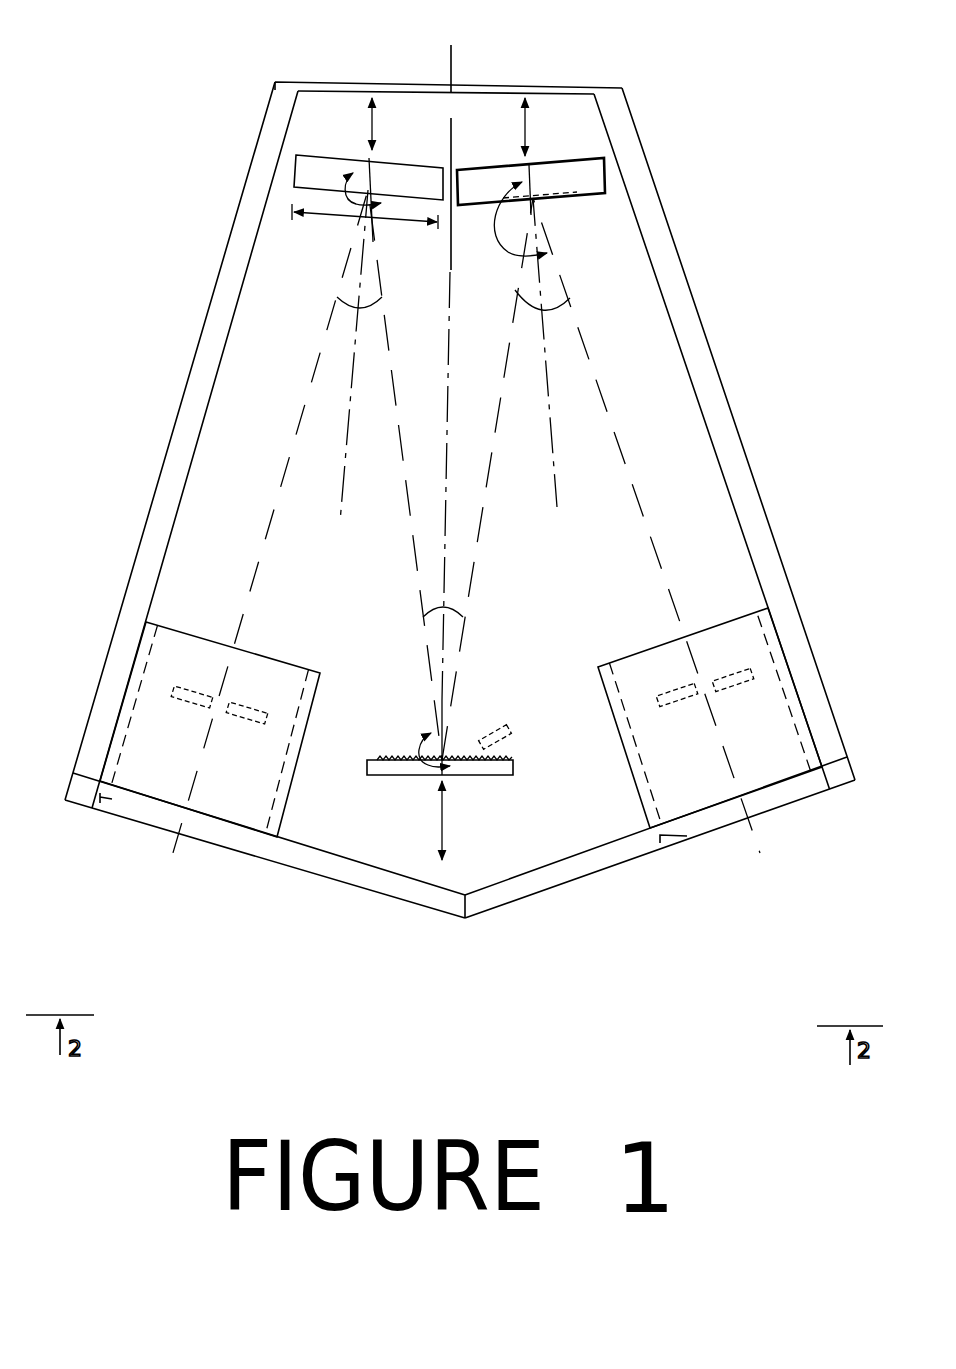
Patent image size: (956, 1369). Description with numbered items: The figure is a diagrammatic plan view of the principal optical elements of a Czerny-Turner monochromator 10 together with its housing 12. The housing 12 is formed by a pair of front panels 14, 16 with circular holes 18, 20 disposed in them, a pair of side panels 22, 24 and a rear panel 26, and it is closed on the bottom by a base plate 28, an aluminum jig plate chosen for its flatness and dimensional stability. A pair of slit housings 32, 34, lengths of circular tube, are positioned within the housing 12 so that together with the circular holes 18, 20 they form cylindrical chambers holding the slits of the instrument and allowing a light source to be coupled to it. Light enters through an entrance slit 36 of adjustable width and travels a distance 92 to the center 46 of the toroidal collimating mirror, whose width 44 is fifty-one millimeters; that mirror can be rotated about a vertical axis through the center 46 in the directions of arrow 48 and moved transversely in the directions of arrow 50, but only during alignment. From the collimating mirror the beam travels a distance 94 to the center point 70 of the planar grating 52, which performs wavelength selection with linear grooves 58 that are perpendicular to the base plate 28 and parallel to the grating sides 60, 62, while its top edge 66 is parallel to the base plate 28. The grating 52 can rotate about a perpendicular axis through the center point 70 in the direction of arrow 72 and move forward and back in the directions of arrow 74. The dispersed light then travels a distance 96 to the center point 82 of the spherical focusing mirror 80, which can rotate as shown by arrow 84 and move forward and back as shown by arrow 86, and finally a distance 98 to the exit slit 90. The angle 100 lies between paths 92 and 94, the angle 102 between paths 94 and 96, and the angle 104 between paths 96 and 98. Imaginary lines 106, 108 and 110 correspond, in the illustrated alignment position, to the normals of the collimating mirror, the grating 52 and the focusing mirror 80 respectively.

The monochromator 10 is at (668, 206).
The housing 12 is at (207, 240).
The front panel 14 is at (327, 868).
The front panel 16 is at (600, 864).
The circular hole 18 is at (104, 803).
The circular hole 20 is at (687, 836).
The side panel 22 is at (190, 381).
The side panel 24 is at (730, 380).
The rear panel 26 is at (360, 83).
The base plate 28 is at (620, 264).
The slit housing 32 is at (317, 710).
The slit housing 34 is at (612, 724).
The entrance slit 36 is at (207, 687).
The width 44 is at (398, 227).
The center 46 is at (380, 187).
The arrow 48 is at (350, 201).
The arrow 50 is at (378, 122).
The grating 52 is at (513, 725).
The grooves 58 is at (367, 757).
The side 60 is at (515, 770).
The side 62 is at (365, 763).
The top edge 66 is at (420, 768).
The center point 70 is at (449, 748).
The arrow 72 is at (429, 731).
The arrow 74 is at (450, 821).
The focusing mirror 80 is at (480, 166).
The center point 82 is at (537, 201).
The arrow 84 is at (500, 237).
The arrow 86 is at (532, 125).
The exit slit 90 is at (693, 680).
The distance 92 is at (288, 460).
The distance 94 is at (393, 387).
The distance 96 is at (490, 470).
The distance 98 is at (620, 450).
The angle 100 is at (338, 298).
The angle 102 is at (457, 609).
The angle 104 is at (554, 308).
The imaginary line 106 is at (343, 487).
The imaginary line 108 is at (447, 400).
The imaginary line 110 is at (557, 468).